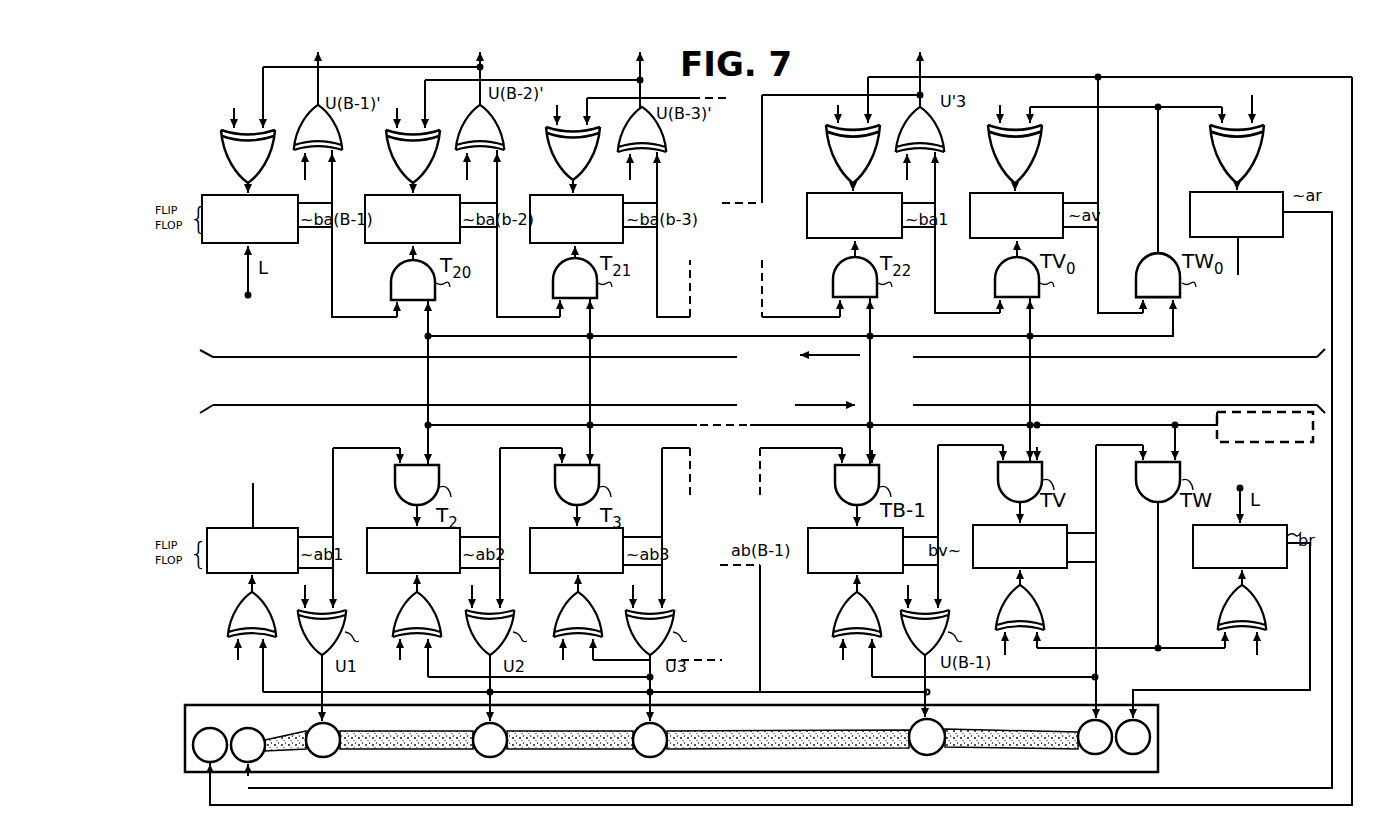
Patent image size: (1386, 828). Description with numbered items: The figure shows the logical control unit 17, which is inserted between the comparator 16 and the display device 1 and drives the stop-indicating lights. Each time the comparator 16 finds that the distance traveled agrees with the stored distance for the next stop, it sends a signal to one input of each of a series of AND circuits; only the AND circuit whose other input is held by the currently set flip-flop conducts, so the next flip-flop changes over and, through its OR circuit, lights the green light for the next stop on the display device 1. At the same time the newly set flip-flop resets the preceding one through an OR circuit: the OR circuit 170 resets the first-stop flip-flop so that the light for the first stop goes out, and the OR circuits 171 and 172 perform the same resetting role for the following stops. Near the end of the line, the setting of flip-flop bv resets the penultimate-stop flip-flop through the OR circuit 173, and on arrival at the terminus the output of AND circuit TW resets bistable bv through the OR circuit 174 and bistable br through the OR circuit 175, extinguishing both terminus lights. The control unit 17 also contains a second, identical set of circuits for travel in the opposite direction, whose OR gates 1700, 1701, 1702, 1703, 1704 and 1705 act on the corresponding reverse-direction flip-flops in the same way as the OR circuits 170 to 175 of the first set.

The logical control unit 17 is at (205, 88).
The OR gate 1700 is at (226, 149).
The OR gate 1701 is at (392, 149).
The OR gate 1702 is at (552, 147).
The OR gate 1703 is at (829, 147).
The OR gate 1704 is at (992, 147).
The OR gate 1705 is at (1214, 147).
The OR circuit 170 is at (233, 609).
The OR circuit 171 is at (398, 609).
The OR circuit 172 is at (561, 609).
The OR circuit 173 is at (838, 609).
The OR circuit 174 is at (1001, 606).
The OR circuit 175 is at (1221, 606).
The comparator 16 is at (1288, 445).
The display device 1 is at (1158, 718).